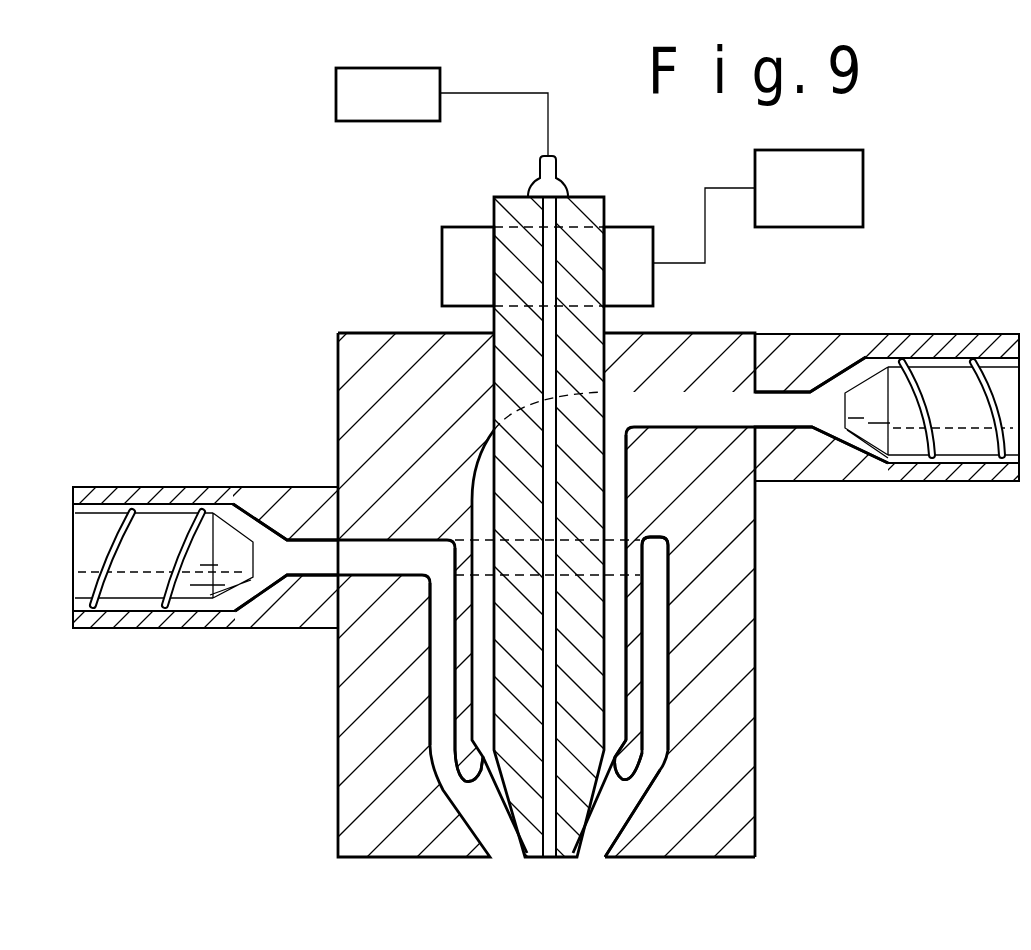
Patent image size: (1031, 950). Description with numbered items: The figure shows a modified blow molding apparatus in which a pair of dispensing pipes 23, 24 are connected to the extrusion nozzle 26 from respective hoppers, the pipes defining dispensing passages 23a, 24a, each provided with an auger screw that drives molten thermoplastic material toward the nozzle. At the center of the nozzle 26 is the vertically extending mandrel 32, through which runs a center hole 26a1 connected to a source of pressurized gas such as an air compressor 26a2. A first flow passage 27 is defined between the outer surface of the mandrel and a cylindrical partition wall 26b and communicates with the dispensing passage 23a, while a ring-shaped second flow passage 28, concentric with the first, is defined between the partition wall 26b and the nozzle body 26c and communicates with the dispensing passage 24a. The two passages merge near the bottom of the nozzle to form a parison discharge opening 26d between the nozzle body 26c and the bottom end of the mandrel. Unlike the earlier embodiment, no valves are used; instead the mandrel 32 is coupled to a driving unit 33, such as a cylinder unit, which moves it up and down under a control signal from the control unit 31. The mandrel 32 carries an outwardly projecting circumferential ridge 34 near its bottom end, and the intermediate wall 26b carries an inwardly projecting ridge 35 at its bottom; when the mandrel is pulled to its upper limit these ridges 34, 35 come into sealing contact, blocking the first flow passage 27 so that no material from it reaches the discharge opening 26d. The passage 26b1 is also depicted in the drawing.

The dispensing pipe 23 is at (919, 484).
The dispensing passage 23a is at (875, 358).
The dispensing pipe 24 is at (208, 635).
The dispensing passage 24a is at (238, 500).
The extrusion nozzle 26 is at (325, 320).
The center hole 26a1 is at (553, 210).
The air compressor 26a2 is at (337, 90).
The partition wall 26b is at (635, 673).
The slot passage 26b1 is at (628, 640).
The nozzle body 26c is at (420, 830).
The parison discharge opening 26d is at (512, 848).
The first flow passage 27 is at (470, 720).
The second flow passage 28 is at (437, 668).
The control unit 31 is at (813, 208).
The mandrel 32 is at (494, 210).
The driving unit 33 is at (460, 270).
The outwardly projecting ridge 34 is at (610, 767).
The inwardly projecting ridge 35 is at (630, 760).